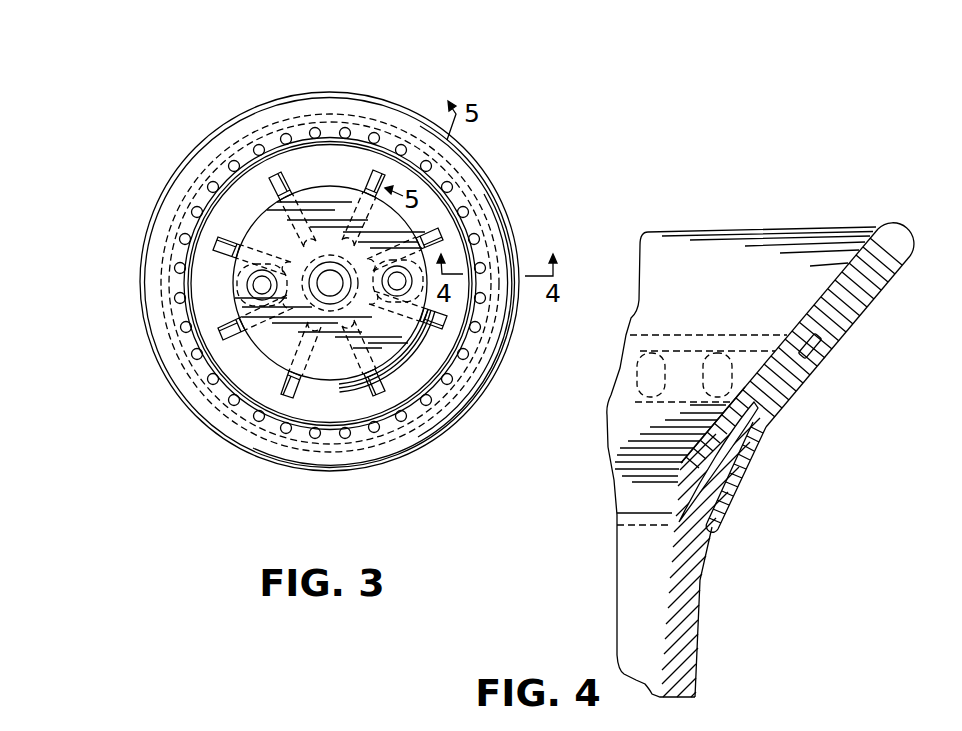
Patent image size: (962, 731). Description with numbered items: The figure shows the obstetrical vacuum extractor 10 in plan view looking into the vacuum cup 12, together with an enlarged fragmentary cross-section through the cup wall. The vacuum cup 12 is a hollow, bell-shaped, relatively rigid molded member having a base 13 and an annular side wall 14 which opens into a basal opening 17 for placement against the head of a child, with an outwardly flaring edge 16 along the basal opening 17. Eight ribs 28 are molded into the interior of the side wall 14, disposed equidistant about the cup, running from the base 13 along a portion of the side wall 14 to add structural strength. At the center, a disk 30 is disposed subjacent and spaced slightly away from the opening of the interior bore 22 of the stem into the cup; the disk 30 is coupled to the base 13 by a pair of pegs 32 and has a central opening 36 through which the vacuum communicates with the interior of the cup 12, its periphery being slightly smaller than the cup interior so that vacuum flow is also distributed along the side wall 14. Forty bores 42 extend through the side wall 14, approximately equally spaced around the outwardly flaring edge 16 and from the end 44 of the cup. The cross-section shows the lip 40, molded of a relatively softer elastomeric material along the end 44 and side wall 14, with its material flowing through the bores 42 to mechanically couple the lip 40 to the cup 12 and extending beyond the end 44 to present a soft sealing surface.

In FIG. 3, the obstetrical vacuum extractor 10 is at (157, 128).
In FIG. 3, the vacuum cup 12 is at (153, 357).
In FIG. 3, the base 13 is at (345, 178).
In FIG. 3, the annular side wall 14 is at (245, 358).
In FIG. 4, the annular side wall 14 is at (703, 605).
In FIG. 3, the outwardly flaring edge 16 is at (170, 222).
In FIG. 4, the outwardly flaring edge 16 is at (765, 427).
In FIG. 3, the basal opening 17 is at (463, 197).
In FIG. 4, the basal opening 17 is at (818, 340).
In FIG. 3, the interior bore 22 is at (360, 452).
In FIG. 3, the ribs 28 is at (250, 253).
In FIG. 3, the disk 30 is at (385, 240).
In FIG. 3, the pegs 32 is at (410, 267).
In FIG. 3, the central opening 36 is at (328, 270).
In FIG. 4, the lip 40 is at (877, 292).
In FIG. 3, the bores 42 is at (460, 403).
In FIG. 4, the bores 42 is at (650, 370).
In FIG. 3, the end of the cup 44 is at (316, 452).
In FIG. 4, the end of the cup 44 is at (838, 247).